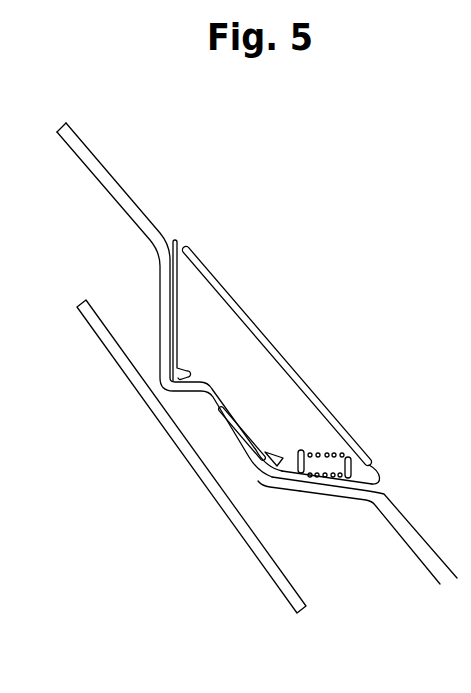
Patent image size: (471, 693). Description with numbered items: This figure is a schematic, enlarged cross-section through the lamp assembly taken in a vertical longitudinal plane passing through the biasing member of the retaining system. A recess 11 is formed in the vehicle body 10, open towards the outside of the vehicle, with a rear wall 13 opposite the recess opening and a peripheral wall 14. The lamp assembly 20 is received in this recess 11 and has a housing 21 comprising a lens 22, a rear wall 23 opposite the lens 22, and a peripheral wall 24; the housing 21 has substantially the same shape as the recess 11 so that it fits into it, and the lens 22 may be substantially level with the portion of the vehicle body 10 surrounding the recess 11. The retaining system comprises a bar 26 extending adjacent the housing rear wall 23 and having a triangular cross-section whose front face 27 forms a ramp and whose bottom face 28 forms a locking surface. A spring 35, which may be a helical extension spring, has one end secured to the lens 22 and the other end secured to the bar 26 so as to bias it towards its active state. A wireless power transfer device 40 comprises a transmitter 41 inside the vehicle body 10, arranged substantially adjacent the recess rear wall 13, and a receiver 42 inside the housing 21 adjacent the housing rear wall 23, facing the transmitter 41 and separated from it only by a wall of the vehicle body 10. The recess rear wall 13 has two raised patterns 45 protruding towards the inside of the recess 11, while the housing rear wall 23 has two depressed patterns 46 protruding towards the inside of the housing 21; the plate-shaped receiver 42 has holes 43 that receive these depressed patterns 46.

The vehicle body 10 is at (117, 177).
The recess 11 is at (112, 305).
The peripheral wall 14 is at (168, 289).
The rear wall 13 is at (223, 488).
The lamp assembly 20 is at (303, 372).
The housing 21 is at (303, 372).
The lens 22 is at (222, 292).
The rear wall 23 is at (220, 445).
The peripheral wall 24 is at (350, 490).
The bar 26 is at (278, 430).
The front face 27 is at (284, 458).
The bottom face 28 is at (291, 478).
The spring 35 is at (333, 455).
The wireless power transfer device 40 is at (169, 456).
The transmitter 41 is at (118, 358).
The receiver 42 is at (172, 388).
The holes 43 is at (212, 410).
The patterns 45 is at (204, 415).
The patterns 46 is at (225, 357).